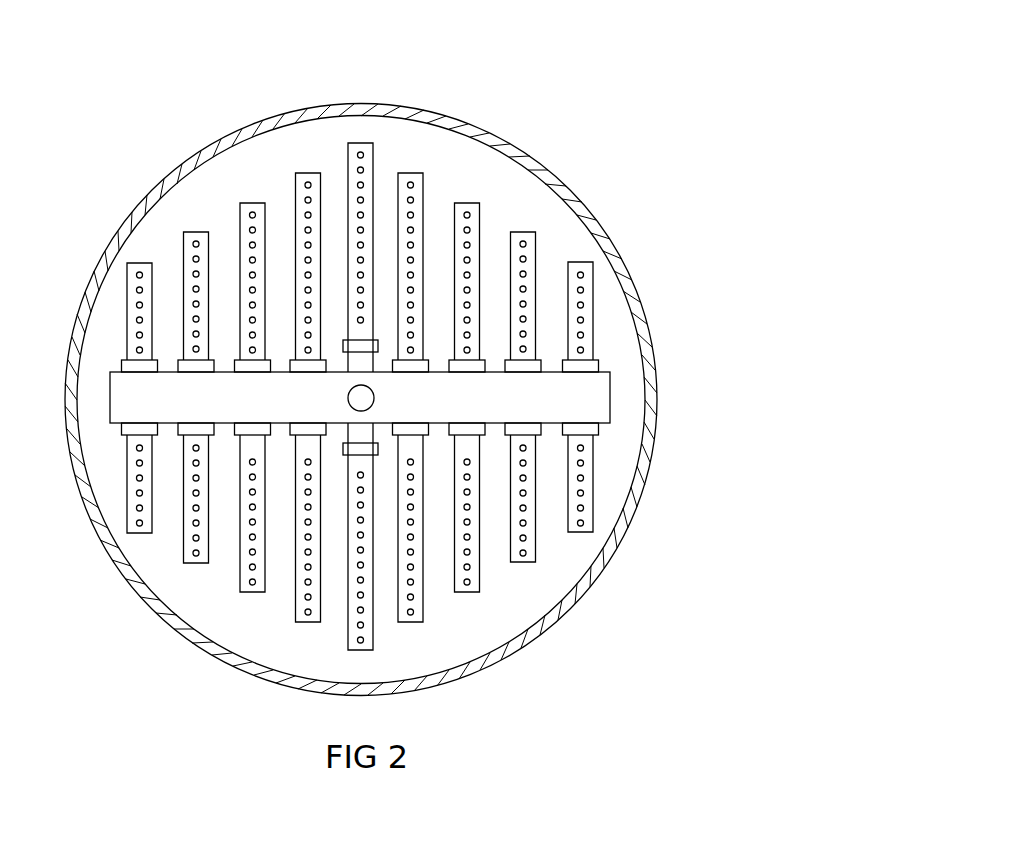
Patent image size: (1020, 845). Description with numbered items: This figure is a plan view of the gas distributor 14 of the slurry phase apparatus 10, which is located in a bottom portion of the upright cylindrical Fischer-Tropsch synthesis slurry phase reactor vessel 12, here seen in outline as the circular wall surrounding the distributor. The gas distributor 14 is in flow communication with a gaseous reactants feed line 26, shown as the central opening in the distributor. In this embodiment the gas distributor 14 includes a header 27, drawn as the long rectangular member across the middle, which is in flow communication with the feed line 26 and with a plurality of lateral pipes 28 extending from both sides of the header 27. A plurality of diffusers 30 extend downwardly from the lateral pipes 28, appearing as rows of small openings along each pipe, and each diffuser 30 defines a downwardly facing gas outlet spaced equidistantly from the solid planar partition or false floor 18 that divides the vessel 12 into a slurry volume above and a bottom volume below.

The slurry phase apparatus 10 is at (568, 65).
The reactor vessel 12 is at (610, 238).
The gas distributor 14 is at (514, 186).
The partition 18 is at (470, 643).
The gaseous reactants feed line 26 is at (375, 388).
The header 27 is at (600, 390).
The lateral pipes 28 is at (196, 232).
The diffusers 30 is at (130, 320).